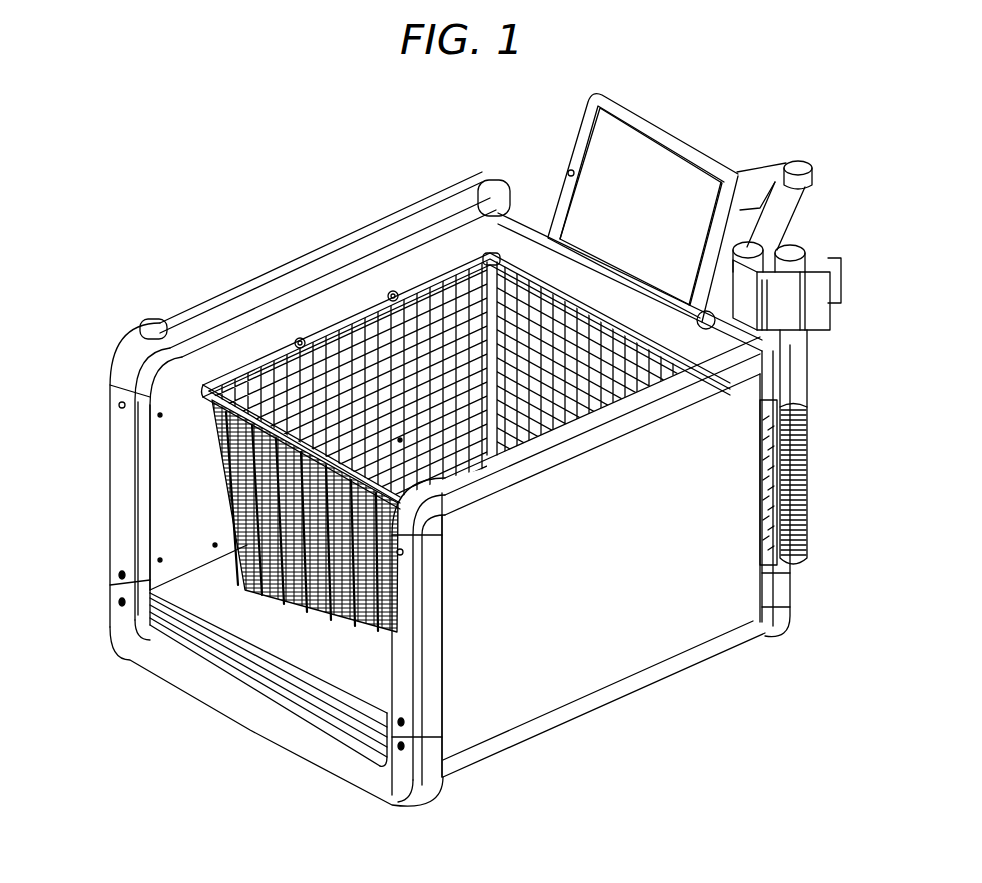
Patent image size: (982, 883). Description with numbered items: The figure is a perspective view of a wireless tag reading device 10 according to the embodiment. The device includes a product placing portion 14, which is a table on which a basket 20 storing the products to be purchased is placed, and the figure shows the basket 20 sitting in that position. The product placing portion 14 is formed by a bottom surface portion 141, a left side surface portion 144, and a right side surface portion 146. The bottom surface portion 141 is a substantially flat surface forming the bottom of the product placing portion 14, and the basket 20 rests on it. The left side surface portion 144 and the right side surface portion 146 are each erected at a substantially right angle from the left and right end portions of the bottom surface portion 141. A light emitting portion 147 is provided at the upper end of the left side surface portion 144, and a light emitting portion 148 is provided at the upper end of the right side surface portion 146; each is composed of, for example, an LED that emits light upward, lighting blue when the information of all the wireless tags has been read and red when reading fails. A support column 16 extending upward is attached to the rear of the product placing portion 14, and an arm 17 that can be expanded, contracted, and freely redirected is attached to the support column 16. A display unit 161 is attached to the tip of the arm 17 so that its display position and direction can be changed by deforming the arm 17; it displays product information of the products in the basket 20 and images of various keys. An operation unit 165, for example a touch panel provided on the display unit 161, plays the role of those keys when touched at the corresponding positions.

The wireless tag reading device 10 is at (376, 130).
The product placing portion 14 is at (220, 521).
The support column 16 is at (793, 373).
The arm 17 is at (775, 215).
The basket 20 is at (338, 330).
The bottom surface portion 141 is at (303, 637).
The left side surface portion 144 is at (180, 452).
The right side surface portion 146 is at (606, 578).
The light emitting portion 147 is at (338, 240).
The light emitting portion 148 is at (605, 405).
The display unit 161 is at (576, 170).
The operation unit 165 is at (655, 162).